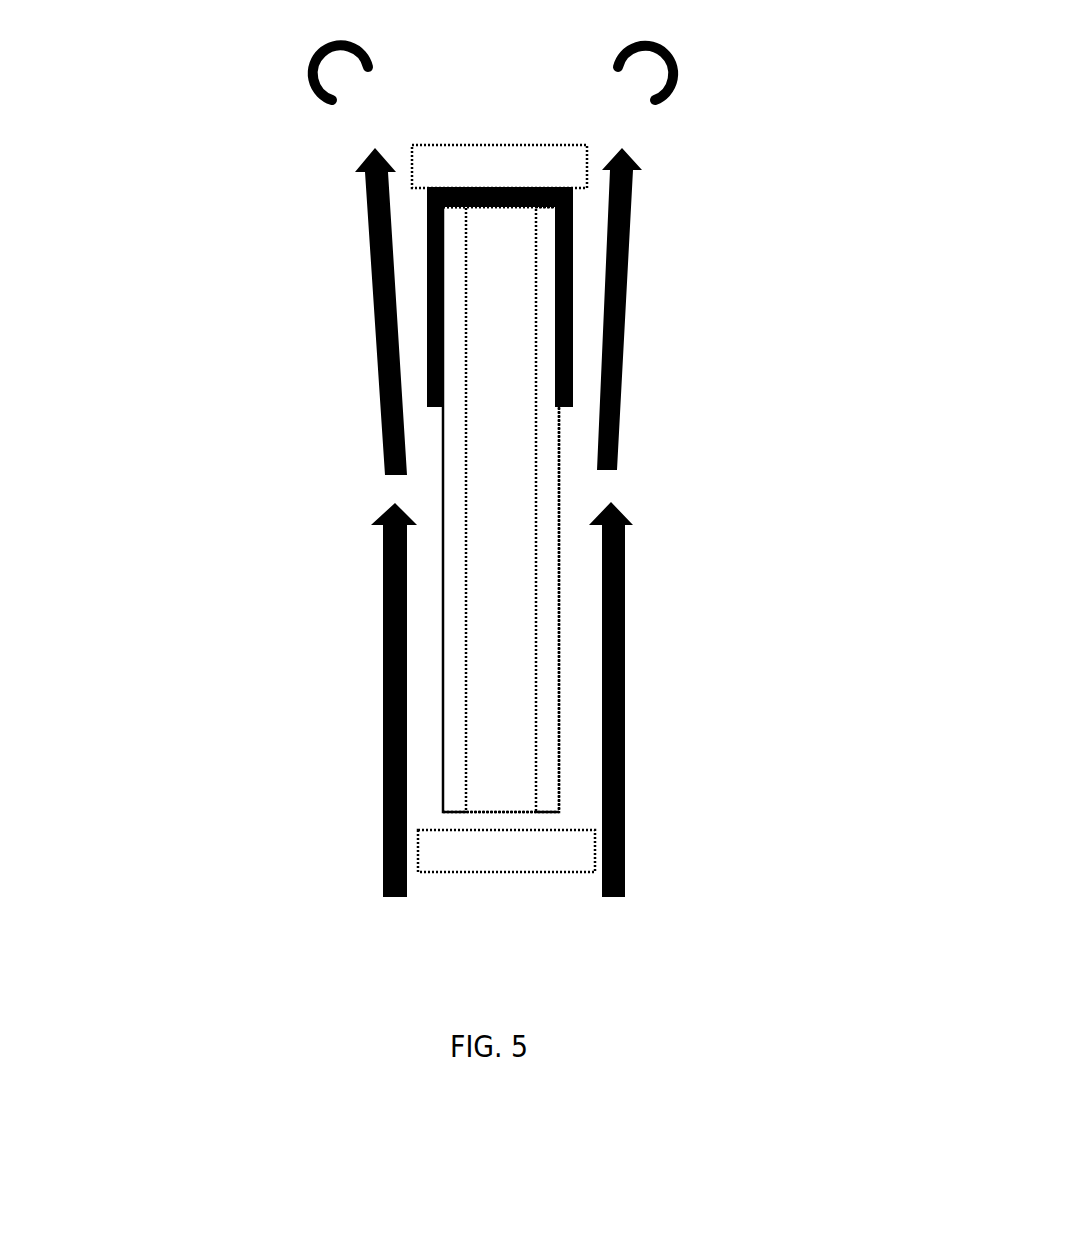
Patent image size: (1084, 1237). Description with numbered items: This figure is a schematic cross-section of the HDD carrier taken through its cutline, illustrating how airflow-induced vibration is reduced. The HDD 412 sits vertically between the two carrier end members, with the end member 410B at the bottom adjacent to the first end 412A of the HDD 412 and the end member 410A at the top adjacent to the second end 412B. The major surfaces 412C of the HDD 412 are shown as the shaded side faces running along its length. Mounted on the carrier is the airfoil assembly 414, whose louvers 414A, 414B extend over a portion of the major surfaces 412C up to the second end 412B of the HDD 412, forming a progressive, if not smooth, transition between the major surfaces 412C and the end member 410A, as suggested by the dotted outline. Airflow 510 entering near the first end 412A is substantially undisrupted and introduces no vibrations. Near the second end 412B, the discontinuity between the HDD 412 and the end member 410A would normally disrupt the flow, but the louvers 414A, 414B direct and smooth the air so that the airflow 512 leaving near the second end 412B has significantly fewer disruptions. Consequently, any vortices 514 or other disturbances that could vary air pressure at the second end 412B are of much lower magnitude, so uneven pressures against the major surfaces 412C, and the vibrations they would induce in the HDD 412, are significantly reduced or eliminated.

The end member 410A is at (530, 160).
The end member 410B is at (520, 878).
The HDD 412 is at (478, 485).
The first end 412A is at (492, 805).
The second end 412B is at (485, 200).
The major surfaces 412C is at (437, 496).
The airfoil assembly 414 is at (470, 294).
The louver 414A is at (430, 297).
The louver 414B is at (572, 268).
The airflow 510 is at (383, 672).
The airflow 512 is at (382, 398).
The vortices 514 is at (310, 70).